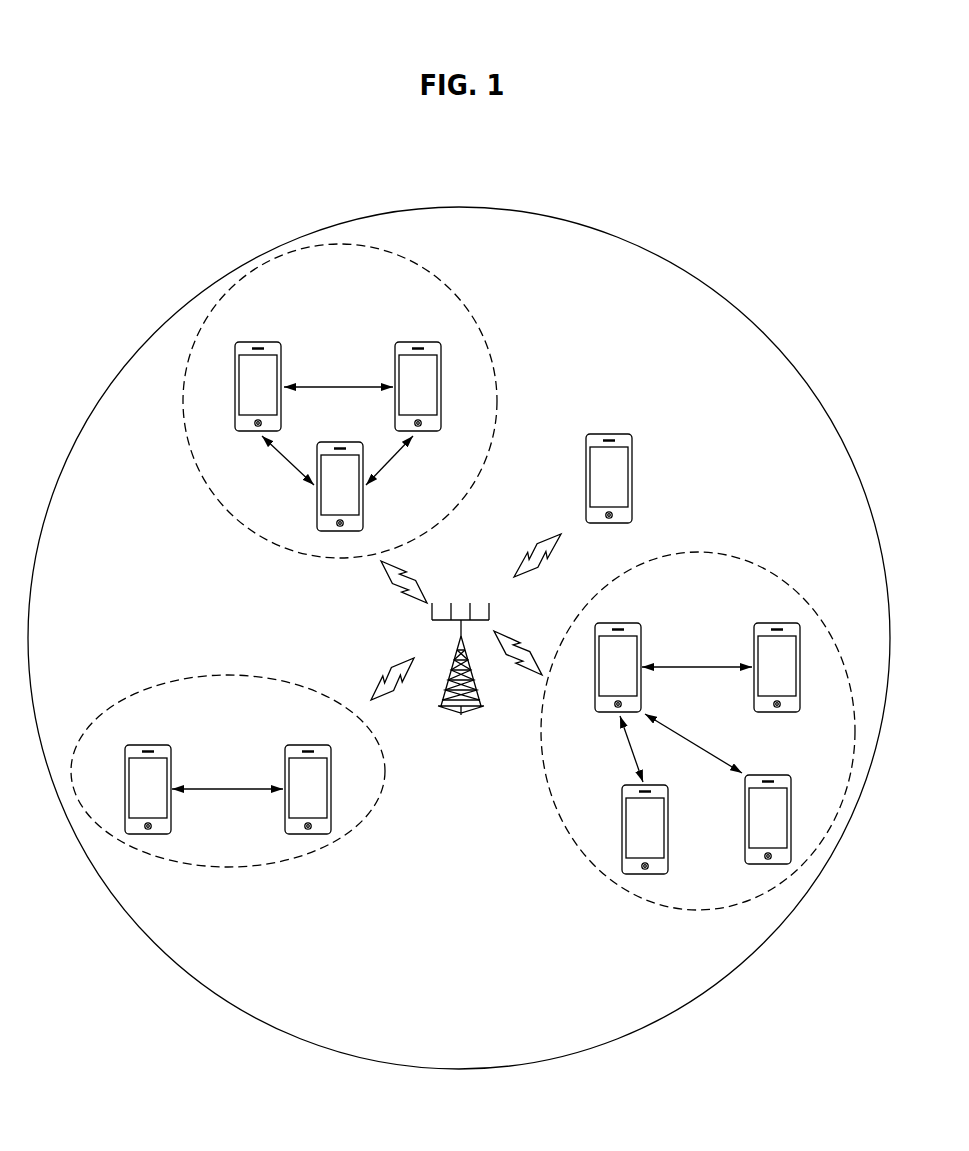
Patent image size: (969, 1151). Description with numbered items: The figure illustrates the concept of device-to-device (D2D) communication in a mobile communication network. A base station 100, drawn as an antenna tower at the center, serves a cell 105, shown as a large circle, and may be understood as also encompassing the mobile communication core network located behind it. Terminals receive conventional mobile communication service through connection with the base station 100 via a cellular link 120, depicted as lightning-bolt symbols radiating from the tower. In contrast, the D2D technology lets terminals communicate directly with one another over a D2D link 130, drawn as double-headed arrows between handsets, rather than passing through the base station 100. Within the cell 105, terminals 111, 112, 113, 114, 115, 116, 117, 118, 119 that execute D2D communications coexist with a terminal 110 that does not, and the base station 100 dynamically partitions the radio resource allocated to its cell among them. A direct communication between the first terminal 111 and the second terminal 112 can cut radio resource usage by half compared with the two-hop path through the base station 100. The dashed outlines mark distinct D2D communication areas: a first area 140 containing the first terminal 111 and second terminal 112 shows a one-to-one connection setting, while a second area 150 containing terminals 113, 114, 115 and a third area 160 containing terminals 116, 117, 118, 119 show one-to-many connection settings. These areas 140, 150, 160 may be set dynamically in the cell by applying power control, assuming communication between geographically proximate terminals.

The base station 100 is at (461, 714).
The cell 105 is at (460, 206).
The terminal 110 is at (609, 434).
The first terminal 111 is at (148, 745).
The second terminal 112 is at (308, 745).
The terminal 113 is at (258, 342).
The terminal 114 is at (418, 342).
The terminal 115 is at (340, 442).
The terminal 116 is at (617, 623).
The terminal 117 is at (777, 623).
The terminal 118 is at (767, 775).
The terminal 119 is at (638, 785).
The cellular link 120 is at (392, 672).
The D2D link 130 is at (227, 788).
The first area 140 is at (226, 675).
The second area 150 is at (469, 312).
The third area 160 is at (697, 553).